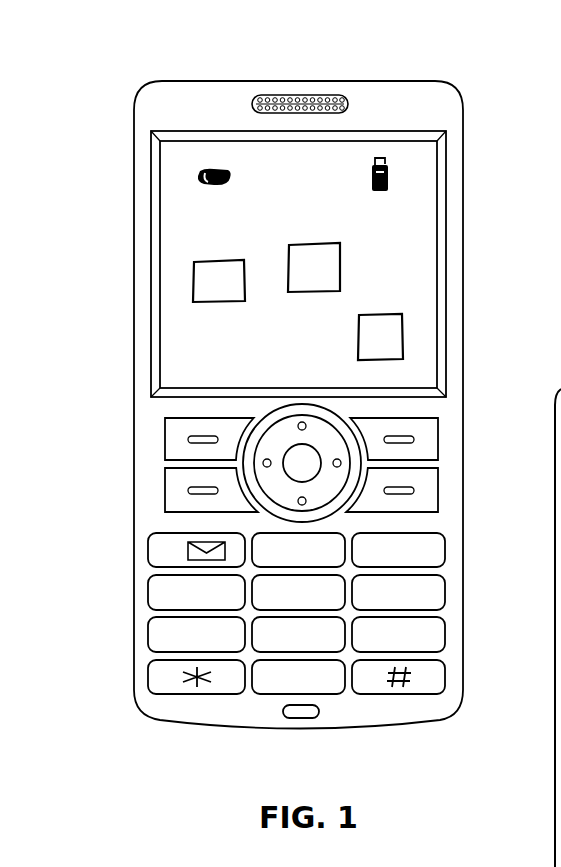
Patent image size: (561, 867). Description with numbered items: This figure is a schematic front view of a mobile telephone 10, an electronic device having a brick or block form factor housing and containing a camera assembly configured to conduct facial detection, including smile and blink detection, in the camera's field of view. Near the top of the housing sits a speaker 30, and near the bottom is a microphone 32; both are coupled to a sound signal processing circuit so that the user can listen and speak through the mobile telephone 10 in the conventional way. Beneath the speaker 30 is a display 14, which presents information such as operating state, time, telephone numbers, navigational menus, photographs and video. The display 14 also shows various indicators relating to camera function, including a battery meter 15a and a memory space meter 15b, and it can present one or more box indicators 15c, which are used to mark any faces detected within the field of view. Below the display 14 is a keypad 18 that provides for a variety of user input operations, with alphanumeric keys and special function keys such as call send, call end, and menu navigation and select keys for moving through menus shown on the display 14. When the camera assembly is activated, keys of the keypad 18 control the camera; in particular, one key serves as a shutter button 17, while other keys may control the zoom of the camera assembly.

The mobile telephone 10 is at (146, 73).
The speaker 30 is at (300, 96).
The display 14 is at (175, 250).
The battery meter 15a is at (197, 176).
The memory space meter 15b is at (394, 177).
The box indicators 15c is at (358, 337).
The shutter button 17 is at (297, 463).
The keypad 18 is at (218, 702).
The microphone 32 is at (307, 716).